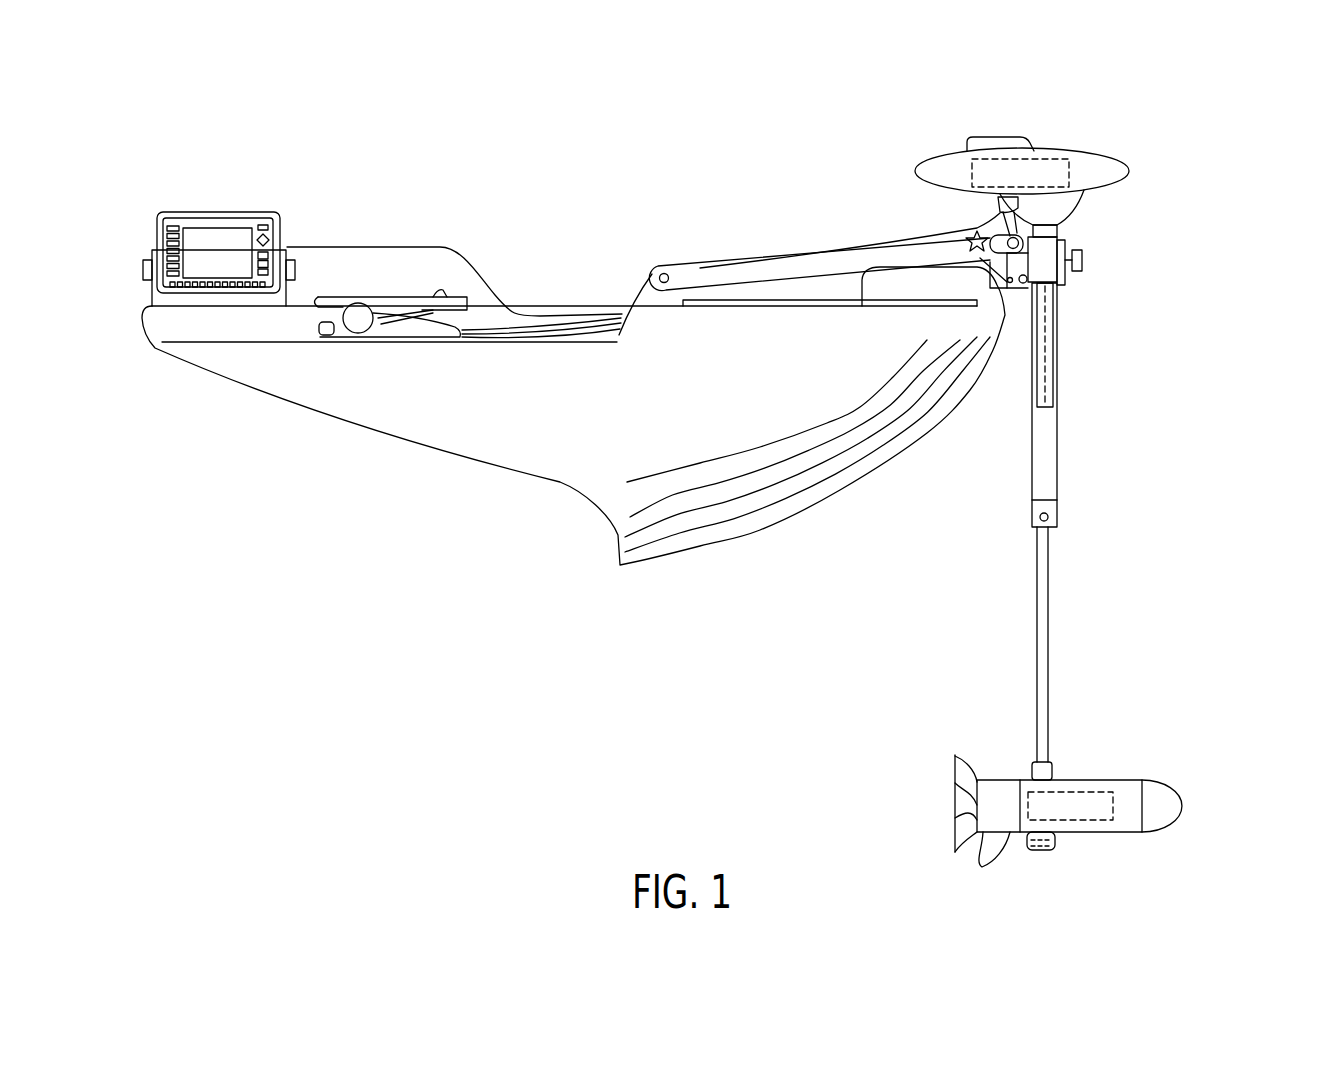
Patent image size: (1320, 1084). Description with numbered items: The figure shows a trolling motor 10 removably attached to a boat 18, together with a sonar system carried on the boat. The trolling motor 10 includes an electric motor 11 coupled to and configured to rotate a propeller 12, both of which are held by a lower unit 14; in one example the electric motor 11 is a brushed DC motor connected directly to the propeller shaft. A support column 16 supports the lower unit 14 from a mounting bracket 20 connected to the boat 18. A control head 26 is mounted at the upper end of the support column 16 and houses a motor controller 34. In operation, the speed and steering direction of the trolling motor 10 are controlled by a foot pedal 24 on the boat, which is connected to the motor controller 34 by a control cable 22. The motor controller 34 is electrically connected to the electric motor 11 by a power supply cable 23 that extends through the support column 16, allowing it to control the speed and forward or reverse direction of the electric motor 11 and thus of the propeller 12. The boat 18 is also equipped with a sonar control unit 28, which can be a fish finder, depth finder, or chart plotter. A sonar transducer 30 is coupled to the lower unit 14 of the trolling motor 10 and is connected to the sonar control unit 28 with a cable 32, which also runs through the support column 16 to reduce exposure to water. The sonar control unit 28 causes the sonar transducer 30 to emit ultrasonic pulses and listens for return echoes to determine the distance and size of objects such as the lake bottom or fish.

The trolling motor 10 is at (1187, 162).
The electric motor 11 is at (1091, 791).
The propeller 12 is at (955, 755).
The lower unit 14 is at (1157, 800).
The support column 16 is at (1058, 428).
The boat 18 is at (393, 427).
The mounting bracket 20 is at (860, 285).
The control cable 22 is at (1003, 226).
The power supply cable 23 is at (1033, 395).
The foot pedal 24 is at (377, 297).
The control head 26 is at (1067, 191).
The sonar control unit 28 is at (258, 212).
The sonar transducer 30 is at (1037, 852).
The cable 32 is at (404, 246).
The motor controller 34 is at (1047, 159).